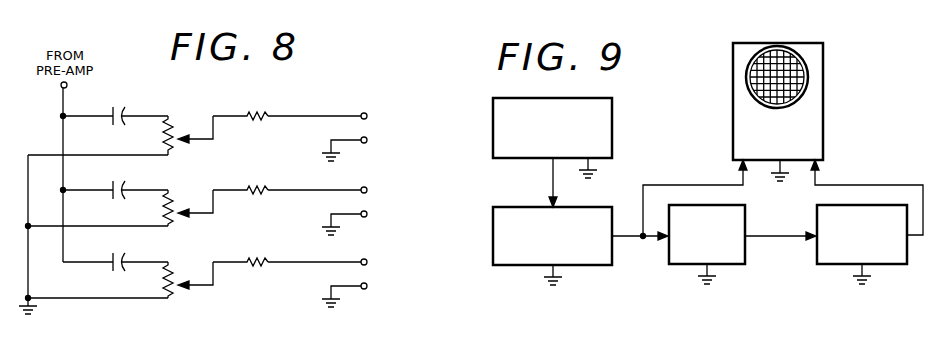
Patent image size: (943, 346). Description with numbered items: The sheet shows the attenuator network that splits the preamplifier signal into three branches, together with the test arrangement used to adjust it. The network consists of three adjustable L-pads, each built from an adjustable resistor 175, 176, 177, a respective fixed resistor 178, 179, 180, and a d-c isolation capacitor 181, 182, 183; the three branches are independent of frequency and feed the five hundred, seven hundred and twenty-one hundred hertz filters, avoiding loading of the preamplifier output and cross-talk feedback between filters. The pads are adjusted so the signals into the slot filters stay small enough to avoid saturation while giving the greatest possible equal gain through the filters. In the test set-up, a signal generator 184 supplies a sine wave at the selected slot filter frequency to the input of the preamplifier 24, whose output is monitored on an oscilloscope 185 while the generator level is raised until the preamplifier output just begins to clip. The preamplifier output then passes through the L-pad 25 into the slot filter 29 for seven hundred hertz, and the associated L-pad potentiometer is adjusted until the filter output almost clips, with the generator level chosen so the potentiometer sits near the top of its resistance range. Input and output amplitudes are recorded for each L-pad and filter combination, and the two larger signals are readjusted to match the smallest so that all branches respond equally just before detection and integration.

In FIG. 8, the L-pad 25 is at (45, 123).
In FIG. 9, the L-pad 25 is at (668, 253).
In FIG. 8, the d-c isolation capacitor 181 is at (113, 110).
In FIG. 8, the d-c isolation capacitor 182 is at (113, 187).
In FIG. 8, the d-c isolation capacitor 183 is at (113, 258).
In FIG. 8, the adjustable resistor 175 is at (170, 120).
In FIG. 8, the adjustable resistor 176 is at (171, 195).
In FIG. 8, the adjustable resistor 177 is at (171, 267).
In FIG. 8, the fixed resistor 178 is at (264, 111).
In FIG. 8, the fixed resistor 179 is at (264, 185).
In FIG. 8, the fixed resistor 180 is at (264, 258).
In FIG. 9, the signal generator 184 is at (608, 124).
In FIG. 9, the preamplifier 24 is at (528, 210).
In FIG. 9, the slot filter 29 is at (817, 255).
In FIG. 9, the oscilloscope 185 is at (736, 108).